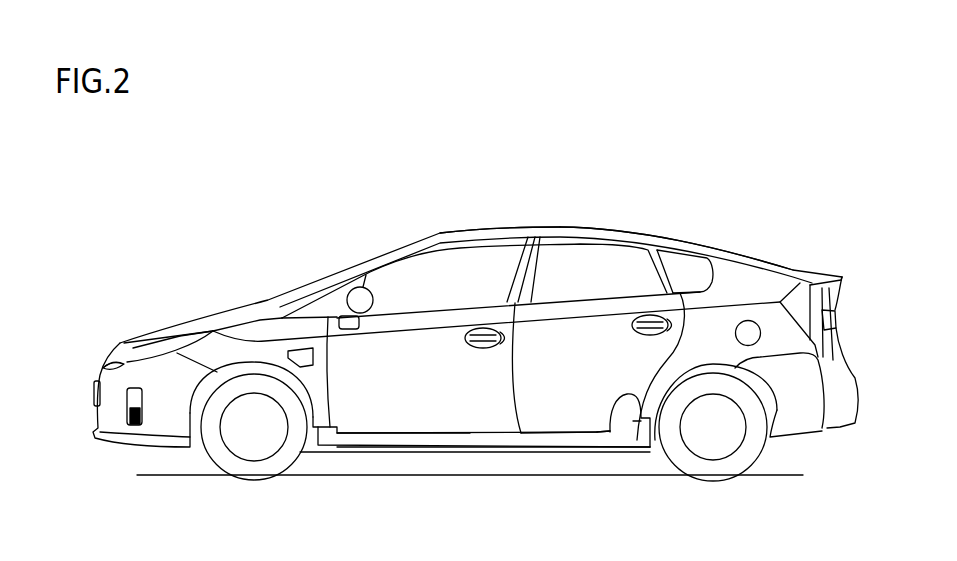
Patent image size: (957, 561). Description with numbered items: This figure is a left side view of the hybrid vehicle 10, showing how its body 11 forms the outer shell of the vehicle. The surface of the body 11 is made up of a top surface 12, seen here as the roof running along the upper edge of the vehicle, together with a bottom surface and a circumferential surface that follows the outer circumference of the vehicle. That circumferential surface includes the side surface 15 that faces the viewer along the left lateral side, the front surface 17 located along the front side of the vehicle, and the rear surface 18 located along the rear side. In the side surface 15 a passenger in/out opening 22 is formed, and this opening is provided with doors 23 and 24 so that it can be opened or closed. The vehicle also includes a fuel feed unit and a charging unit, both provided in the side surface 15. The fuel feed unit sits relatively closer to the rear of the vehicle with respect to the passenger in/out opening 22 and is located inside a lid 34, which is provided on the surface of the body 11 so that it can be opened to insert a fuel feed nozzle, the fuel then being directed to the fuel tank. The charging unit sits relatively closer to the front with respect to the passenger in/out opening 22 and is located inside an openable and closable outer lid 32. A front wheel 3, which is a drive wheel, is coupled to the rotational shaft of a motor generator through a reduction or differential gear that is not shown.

The hybrid vehicle 10 is at (554, 146).
The front wheel 3 is at (252, 470).
The body 11 is at (670, 222).
The top surface 12 is at (587, 228).
The lid 34 is at (748, 332).
The rear surface 18 is at (830, 298).
The outer lid 32 is at (300, 352).
The front surface 17 is at (105, 359).
The door 23 is at (407, 413).
The side surface 15 is at (472, 415).
The door 24 is at (553, 417).
The passenger in/out opening 22 is at (608, 417).